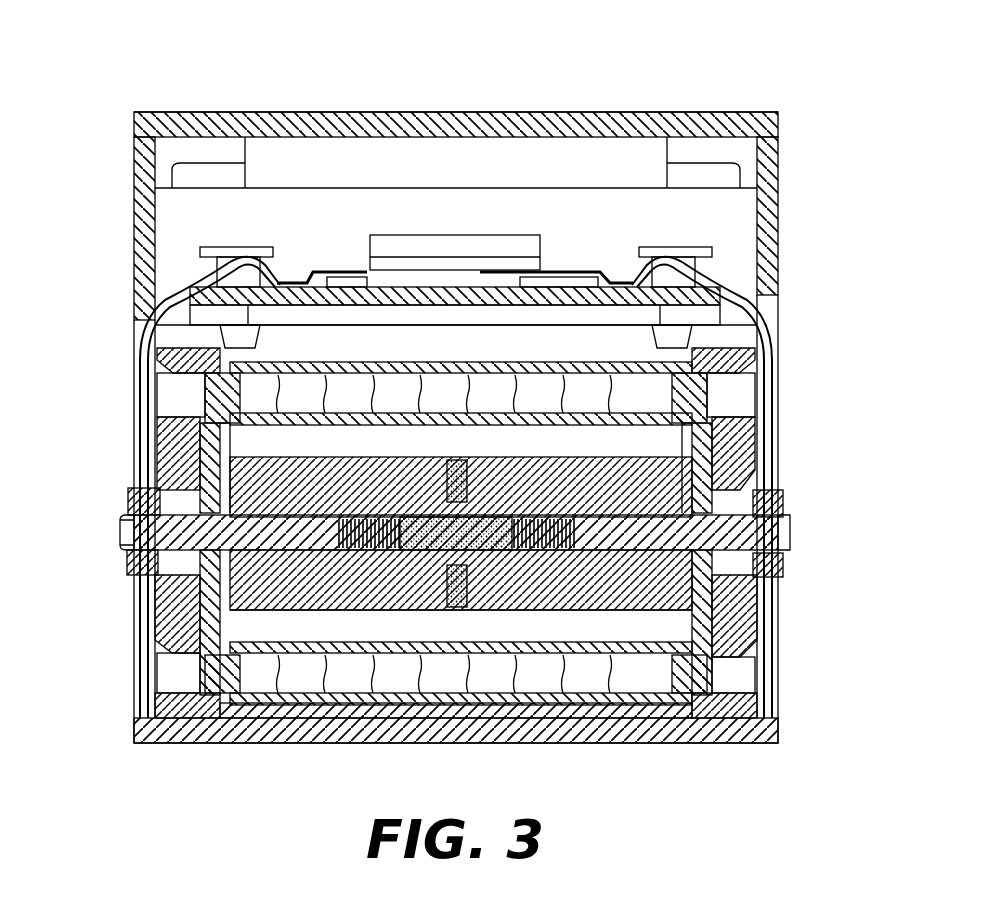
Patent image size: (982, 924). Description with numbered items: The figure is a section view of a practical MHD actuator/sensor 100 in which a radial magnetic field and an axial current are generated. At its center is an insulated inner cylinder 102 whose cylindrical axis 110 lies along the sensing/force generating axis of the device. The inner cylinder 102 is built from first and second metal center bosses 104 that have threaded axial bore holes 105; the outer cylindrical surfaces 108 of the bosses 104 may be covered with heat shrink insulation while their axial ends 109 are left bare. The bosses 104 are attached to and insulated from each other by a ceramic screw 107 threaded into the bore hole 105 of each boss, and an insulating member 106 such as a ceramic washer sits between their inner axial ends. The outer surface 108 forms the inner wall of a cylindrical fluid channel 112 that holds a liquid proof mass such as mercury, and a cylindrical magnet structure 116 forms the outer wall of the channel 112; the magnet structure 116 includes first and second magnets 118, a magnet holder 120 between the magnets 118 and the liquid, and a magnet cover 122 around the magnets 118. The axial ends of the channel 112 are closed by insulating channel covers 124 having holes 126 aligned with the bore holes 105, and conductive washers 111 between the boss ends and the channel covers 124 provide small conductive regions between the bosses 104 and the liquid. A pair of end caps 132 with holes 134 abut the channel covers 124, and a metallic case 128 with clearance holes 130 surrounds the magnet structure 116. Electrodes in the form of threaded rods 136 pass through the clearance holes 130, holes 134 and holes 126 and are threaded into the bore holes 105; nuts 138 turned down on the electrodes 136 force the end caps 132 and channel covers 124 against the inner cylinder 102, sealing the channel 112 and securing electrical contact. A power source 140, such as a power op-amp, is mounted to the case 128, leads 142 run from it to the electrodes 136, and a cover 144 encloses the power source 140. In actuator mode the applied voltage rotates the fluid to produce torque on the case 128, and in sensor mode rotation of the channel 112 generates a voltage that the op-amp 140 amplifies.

The MHD actuator/sensor 100 is at (847, 84).
The insulated inner cylinder 102 is at (600, 610).
The metal center bosses 104 is at (268, 480).
The threaded axial bore holes 105 is at (372, 540).
The insulating member 106 is at (460, 475).
The insulating threaded member or ceramic screw 107 is at (457, 607).
The outer cylindrical surfaces 108 is at (415, 556).
The axial ends 109 is at (697, 587).
The cylindrical axis 110 is at (792, 527).
The conductive washers 111 is at (702, 574).
The cylindrical fluid channel 112 is at (230, 440).
The cylindrical magnet structure 116 is at (480, 362).
The magnets 118 is at (395, 372).
The magnet holder 120 is at (195, 383).
The magnet cover 122 is at (610, 718).
The channel covers 124 is at (180, 614).
The holes 126 is at (790, 566).
The metallic case 128 is at (350, 742).
The clearance holes 130 is at (790, 383).
The end caps 132 is at (757, 437).
The holes 134 is at (190, 577).
The electrodes 136 is at (122, 536).
The nuts 138 is at (150, 492).
The power source 140 is at (480, 236).
The leads 142 is at (790, 325).
The cover 144 is at (198, 112).